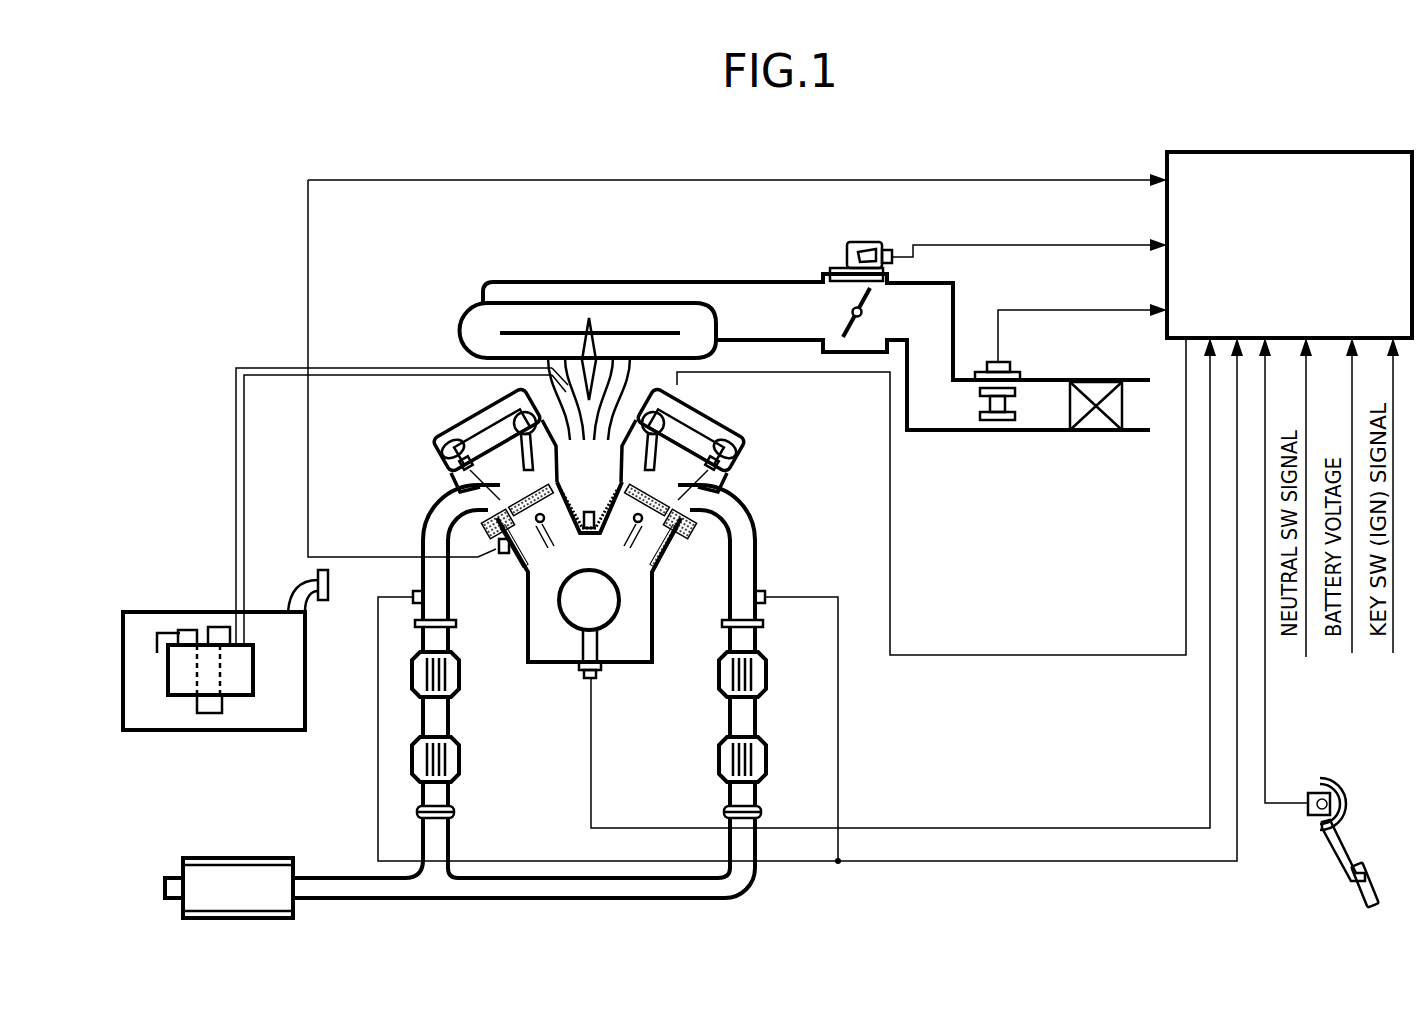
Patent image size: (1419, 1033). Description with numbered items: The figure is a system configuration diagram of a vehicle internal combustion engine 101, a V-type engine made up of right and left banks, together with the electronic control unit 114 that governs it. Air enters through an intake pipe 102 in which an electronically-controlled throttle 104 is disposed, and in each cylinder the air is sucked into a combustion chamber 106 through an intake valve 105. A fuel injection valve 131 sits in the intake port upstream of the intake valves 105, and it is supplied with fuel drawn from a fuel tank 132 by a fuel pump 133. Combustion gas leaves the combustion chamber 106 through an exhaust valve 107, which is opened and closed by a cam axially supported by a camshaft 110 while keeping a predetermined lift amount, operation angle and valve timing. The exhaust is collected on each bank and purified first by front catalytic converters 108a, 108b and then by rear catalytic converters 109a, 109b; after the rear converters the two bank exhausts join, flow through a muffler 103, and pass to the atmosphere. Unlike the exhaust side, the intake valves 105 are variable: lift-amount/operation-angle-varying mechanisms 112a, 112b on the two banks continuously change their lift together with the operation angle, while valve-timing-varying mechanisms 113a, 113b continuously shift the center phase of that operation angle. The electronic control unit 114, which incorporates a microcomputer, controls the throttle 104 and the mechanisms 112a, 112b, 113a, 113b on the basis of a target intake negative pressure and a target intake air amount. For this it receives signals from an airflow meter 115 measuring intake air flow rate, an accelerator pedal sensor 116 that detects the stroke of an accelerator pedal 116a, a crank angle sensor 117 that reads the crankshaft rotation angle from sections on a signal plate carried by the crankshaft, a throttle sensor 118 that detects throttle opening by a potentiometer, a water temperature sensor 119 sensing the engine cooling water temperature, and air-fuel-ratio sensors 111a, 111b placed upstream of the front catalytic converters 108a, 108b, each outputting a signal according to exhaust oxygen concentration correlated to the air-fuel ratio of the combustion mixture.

The internal combustion engine 101 is at (418, 429).
The intake pipe 102 is at (767, 283).
The muffler 103 is at (277, 858).
The electronically-controlled throttle 104 is at (834, 263).
The intake valve 105 is at (534, 580).
The combustion chamber 106 is at (668, 538).
The exhaust valve 107 is at (478, 489).
The front catalytic converter 108a is at (733, 680).
The front catalytic converter 108b is at (458, 680).
The rear catalytic converter 109a is at (733, 768).
The rear catalytic converter 109b is at (458, 768).
The camshaft 110 is at (442, 449).
The air-fuel-ratio sensor 111a is at (766, 591).
The air-fuel-ratio sensor 111b is at (418, 591).
The lift-amount/operation-angle-varying mechanism 112a is at (662, 411).
The lift-amount/operation-angle-varying mechanism 112b is at (494, 402).
The valve-timing-varying mechanism 113a is at (736, 426).
The valve-timing-varying mechanism 113b is at (475, 426).
The electronic control unit 114 is at (1363, 152).
The airflow meter 115 is at (992, 422).
The accelerator pedal sensor 116 is at (1310, 817).
The accelerator pedal 116a is at (1361, 896).
The crank angle sensor 117 is at (588, 678).
The throttle sensor 118 is at (885, 250).
The water temperature sensor 119 is at (505, 553).
The fuel injection valve 131 is at (585, 330).
The fuel tank 132 is at (240, 667).
The fuel pump 133 is at (253, 693).